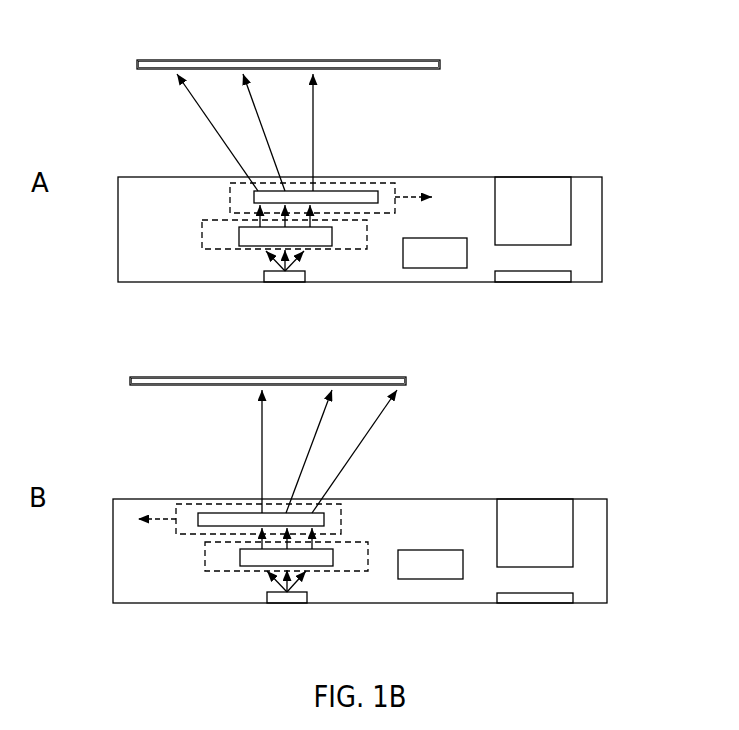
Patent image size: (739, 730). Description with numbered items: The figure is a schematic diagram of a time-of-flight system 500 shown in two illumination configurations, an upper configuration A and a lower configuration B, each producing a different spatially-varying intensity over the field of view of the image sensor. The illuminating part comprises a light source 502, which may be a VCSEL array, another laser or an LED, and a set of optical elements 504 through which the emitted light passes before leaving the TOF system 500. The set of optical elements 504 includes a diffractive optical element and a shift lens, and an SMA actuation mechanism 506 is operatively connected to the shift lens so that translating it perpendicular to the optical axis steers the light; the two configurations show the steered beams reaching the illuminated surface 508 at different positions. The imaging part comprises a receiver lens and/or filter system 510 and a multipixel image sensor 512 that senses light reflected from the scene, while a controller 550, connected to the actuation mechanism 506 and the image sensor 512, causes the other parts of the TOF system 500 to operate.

The TOF system 500 is at (188, 282).
The light source 502 is at (260, 275).
The set of optical elements 504 is at (225, 195).
The SMA actuation mechanism 506 is at (397, 192).
The target surface 508 is at (380, 58).
The receiver lens and/or filter system 510 is at (533, 185).
The image sensor 512 is at (533, 282).
The controller 550 is at (438, 270).